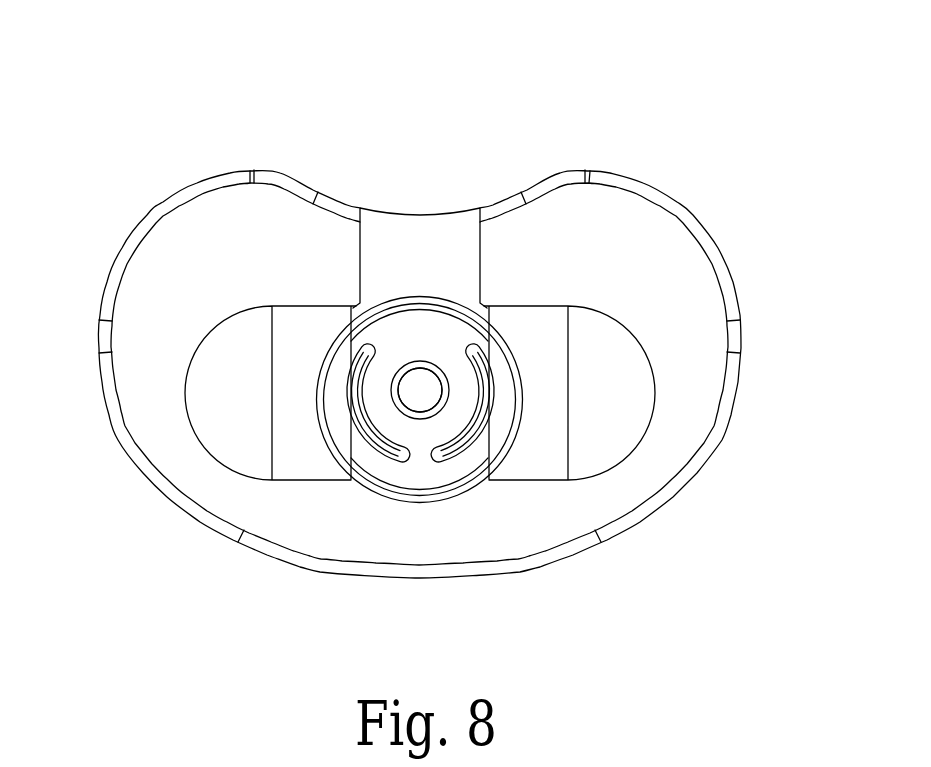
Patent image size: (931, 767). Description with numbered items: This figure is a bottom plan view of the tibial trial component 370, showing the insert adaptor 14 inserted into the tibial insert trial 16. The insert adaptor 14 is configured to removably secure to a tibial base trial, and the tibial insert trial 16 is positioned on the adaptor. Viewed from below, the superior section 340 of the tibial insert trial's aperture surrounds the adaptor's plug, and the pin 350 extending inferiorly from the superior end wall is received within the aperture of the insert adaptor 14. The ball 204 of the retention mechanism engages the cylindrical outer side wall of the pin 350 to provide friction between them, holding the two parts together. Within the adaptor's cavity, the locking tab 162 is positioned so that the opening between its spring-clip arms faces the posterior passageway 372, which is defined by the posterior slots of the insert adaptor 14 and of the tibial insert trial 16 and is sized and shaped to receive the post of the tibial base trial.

The tibial trial component 370 is at (704, 138).
The posterior passageway 372 is at (392, 240).
The tibial insert trial 16 is at (630, 362).
The insert adaptor 14 is at (425, 474).
The locking tab 162 is at (479, 397).
The superior section of the aperture 340 is at (448, 407).
The ball 204 is at (418, 367).
The pin 350 is at (428, 392).